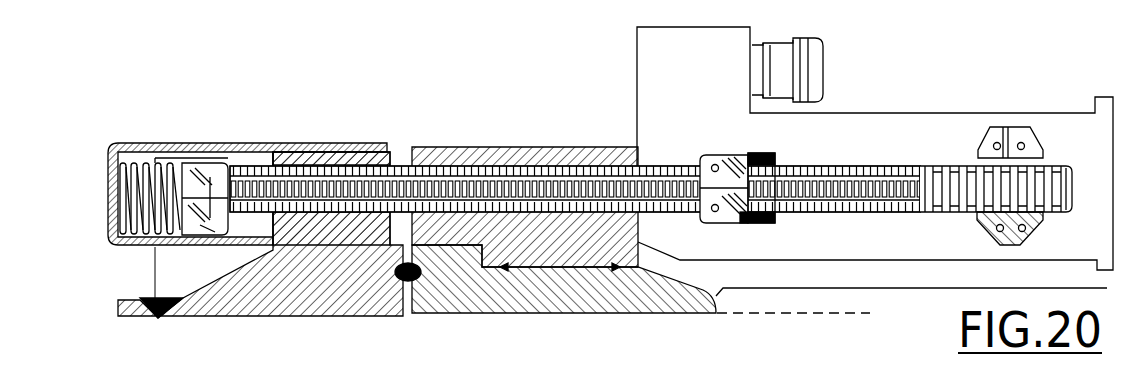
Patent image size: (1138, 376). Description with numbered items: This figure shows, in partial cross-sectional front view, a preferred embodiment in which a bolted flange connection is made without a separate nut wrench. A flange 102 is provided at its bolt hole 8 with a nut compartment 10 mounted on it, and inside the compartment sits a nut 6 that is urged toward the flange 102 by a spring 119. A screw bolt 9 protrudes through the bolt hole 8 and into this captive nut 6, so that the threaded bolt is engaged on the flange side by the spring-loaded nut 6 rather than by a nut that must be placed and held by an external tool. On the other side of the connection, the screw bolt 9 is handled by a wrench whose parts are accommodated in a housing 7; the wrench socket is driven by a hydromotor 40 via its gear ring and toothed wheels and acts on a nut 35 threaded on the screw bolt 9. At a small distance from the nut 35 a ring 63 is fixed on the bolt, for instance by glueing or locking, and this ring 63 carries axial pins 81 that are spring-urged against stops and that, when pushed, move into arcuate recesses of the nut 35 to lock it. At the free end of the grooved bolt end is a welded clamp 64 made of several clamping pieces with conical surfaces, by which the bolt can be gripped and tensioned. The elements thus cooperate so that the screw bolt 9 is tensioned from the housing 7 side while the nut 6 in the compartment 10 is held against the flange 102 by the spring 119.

The nut compartment 10 is at (252, 165).
The spring 119 is at (140, 243).
The nut 6 is at (202, 240).
The bolt hole 8 is at (348, 168).
The screw bolt 9 is at (512, 168).
The flange 102 is at (485, 298).
The nut 35 is at (723, 218).
The axial pin 81 is at (740, 160).
The ring 63 is at (765, 225).
The housing 7 is at (892, 113).
The hydromotor 40 is at (806, 69).
The clamp 64 is at (990, 140).